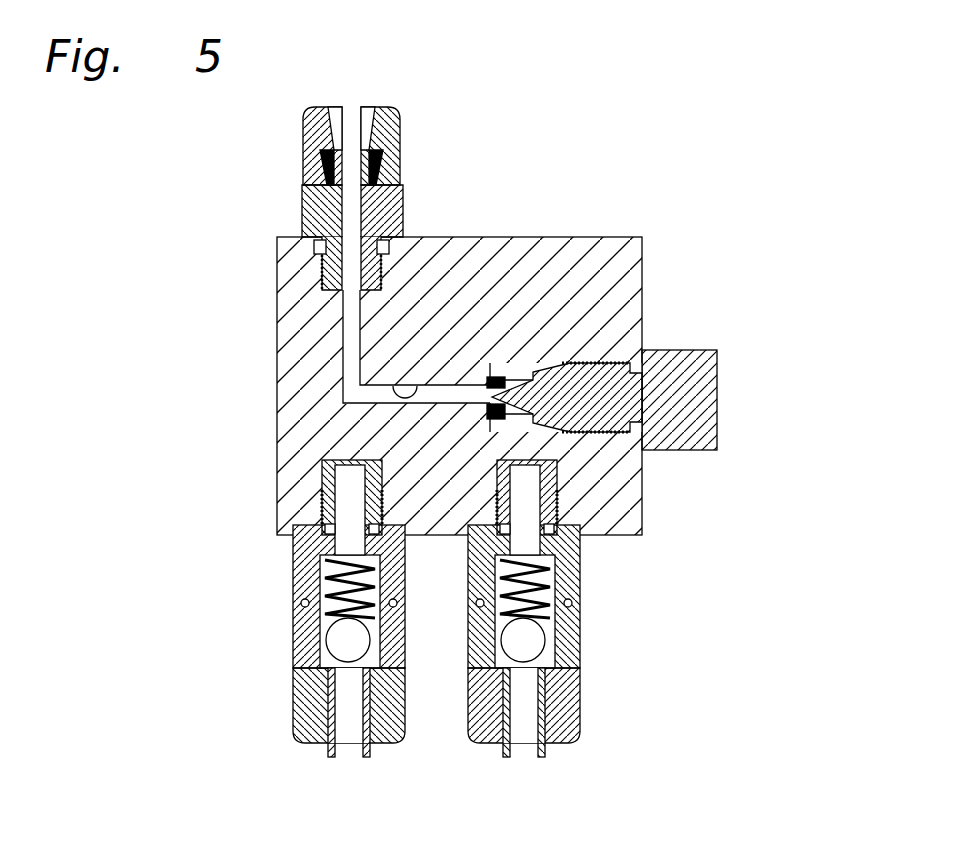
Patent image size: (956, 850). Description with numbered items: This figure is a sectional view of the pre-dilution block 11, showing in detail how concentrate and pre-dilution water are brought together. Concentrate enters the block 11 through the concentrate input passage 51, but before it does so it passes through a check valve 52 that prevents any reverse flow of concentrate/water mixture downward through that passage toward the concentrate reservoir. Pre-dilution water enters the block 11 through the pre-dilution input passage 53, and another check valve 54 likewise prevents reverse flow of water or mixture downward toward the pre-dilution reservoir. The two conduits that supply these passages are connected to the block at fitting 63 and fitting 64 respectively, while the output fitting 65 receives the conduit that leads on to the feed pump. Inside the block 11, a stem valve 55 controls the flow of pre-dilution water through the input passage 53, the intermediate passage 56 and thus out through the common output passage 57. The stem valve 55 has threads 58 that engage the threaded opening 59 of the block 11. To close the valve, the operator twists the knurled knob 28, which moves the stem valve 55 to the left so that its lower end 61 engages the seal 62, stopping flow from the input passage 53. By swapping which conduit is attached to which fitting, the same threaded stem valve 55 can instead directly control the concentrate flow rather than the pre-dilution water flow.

The pre-dilution block 11 is at (718, 97).
The common output passage 57 is at (318, 153).
The output fitting 65 is at (310, 220).
The intermediate passage 56 is at (412, 385).
The seal 62 is at (498, 377).
The lower end 61 is at (523, 377).
The threaded opening 59 is at (645, 293).
The stem valve 55 is at (645, 355).
The knurled knob 28 is at (718, 387).
The threads 58 is at (610, 433).
The concentrate input passage 51 is at (322, 484).
The fitting 63 is at (297, 543).
The check valve 52 is at (297, 632).
The pre-dilution input passage 53 is at (603, 596).
The fitting 64 is at (603, 556).
The check valve 54 is at (583, 687).